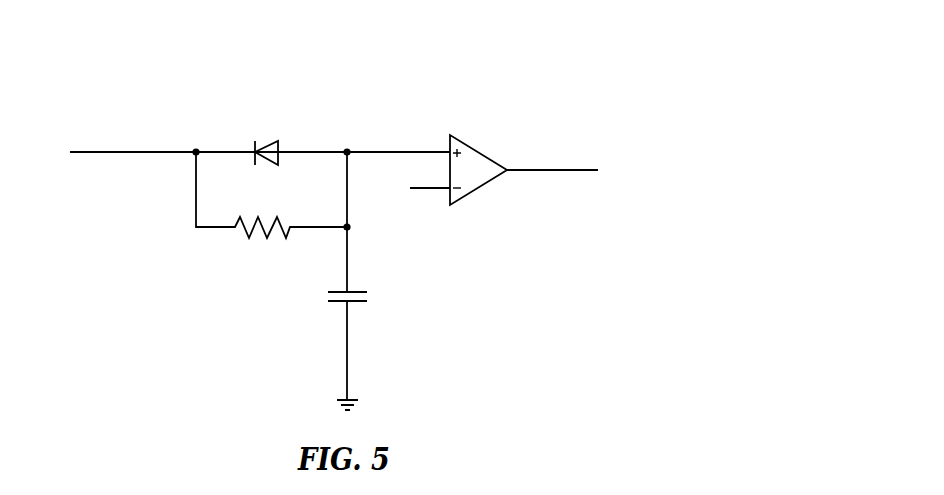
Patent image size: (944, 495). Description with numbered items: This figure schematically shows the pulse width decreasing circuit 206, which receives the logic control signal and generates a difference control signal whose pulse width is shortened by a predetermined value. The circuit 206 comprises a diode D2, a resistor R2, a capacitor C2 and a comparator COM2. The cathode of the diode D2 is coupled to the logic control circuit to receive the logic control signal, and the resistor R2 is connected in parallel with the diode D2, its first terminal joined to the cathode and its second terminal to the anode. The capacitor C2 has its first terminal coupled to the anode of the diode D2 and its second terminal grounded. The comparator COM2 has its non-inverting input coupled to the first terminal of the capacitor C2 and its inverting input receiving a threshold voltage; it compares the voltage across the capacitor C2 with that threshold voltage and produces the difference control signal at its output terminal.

The pulse width decreasing circuit 206 is at (540, 75).
The diode D2 is at (266, 141).
The resistor R2 is at (271, 210).
The capacitor C2 is at (363, 281).
The comparator COM2 is at (492, 177).